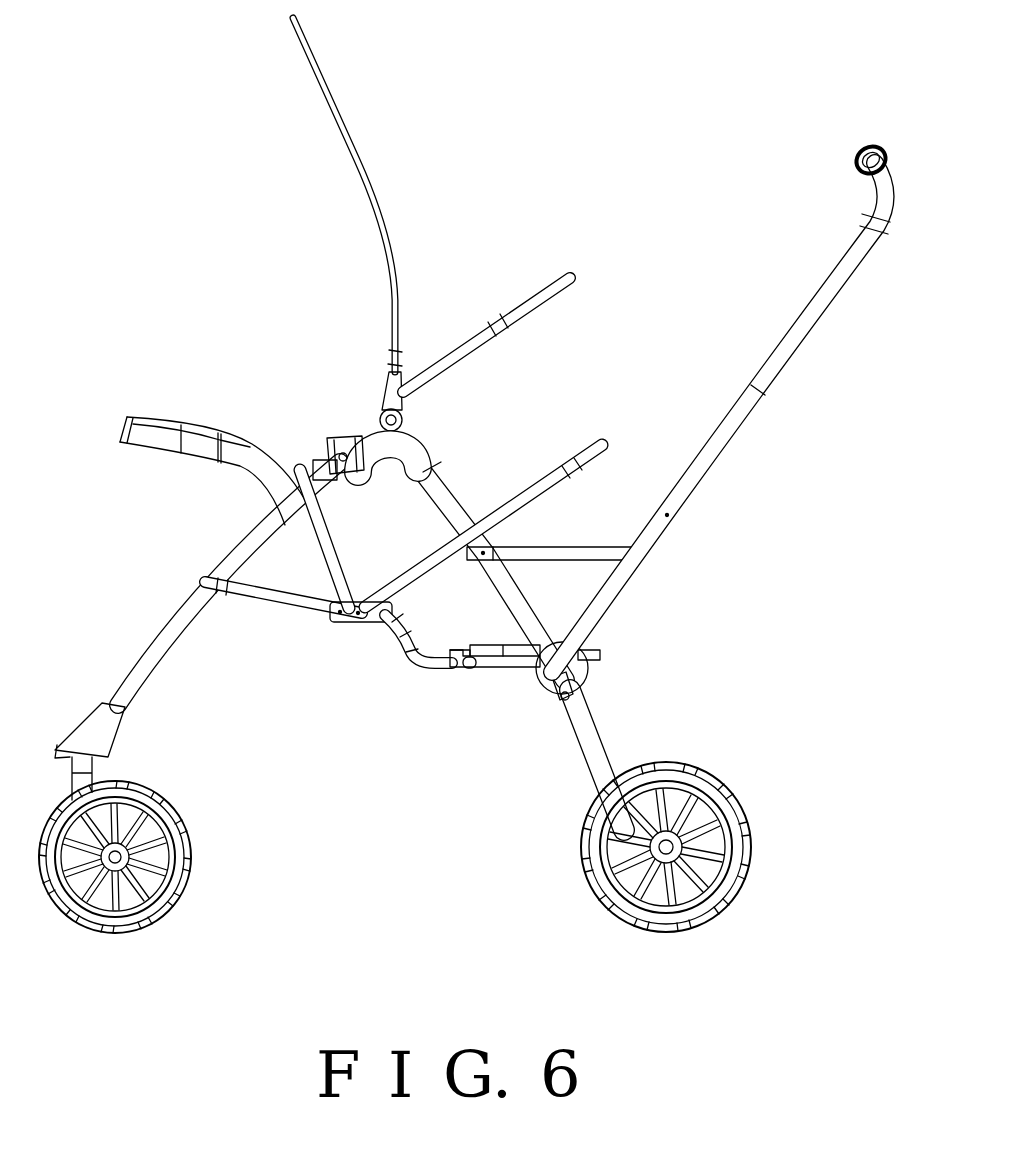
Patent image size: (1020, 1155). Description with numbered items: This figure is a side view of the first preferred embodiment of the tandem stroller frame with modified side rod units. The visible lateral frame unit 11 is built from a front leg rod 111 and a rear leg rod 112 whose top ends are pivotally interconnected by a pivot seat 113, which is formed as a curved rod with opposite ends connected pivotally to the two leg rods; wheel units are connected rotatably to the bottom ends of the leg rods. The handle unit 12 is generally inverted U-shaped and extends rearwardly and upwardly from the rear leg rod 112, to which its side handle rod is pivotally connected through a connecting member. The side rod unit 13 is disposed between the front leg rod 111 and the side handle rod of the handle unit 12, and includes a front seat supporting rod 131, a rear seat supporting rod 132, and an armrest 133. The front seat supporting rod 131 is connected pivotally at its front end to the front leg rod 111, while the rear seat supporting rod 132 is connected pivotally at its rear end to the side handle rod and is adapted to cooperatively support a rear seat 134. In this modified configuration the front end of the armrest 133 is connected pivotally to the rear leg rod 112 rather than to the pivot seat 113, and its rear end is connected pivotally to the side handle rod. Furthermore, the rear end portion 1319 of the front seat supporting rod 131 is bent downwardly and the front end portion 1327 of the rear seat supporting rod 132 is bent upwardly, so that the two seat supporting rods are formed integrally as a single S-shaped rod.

The lateral frame unit 11 is at (371, 570).
The front leg rod 111 is at (148, 655).
The rear leg rod 112 is at (520, 620).
The pivot seat 113 is at (410, 452).
The handle unit 12 is at (807, 287).
The side rod unit 13 is at (426, 629).
The front seat supporting rod 131 is at (258, 596).
The rear seat supporting rod 132 is at (467, 672).
The armrest 133 is at (558, 552).
The rear seat 134 is at (485, 645).
The rear end portion 1319 is at (392, 625).
The front end portion 1327 is at (412, 668).